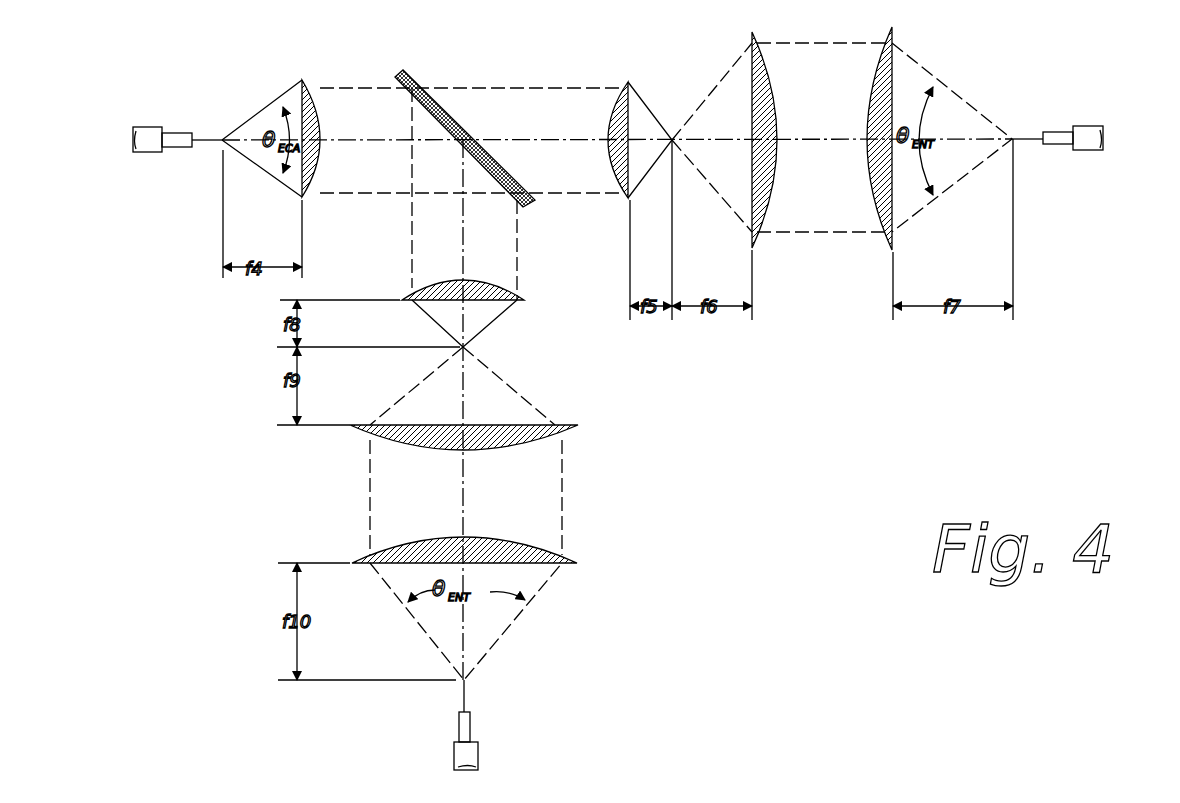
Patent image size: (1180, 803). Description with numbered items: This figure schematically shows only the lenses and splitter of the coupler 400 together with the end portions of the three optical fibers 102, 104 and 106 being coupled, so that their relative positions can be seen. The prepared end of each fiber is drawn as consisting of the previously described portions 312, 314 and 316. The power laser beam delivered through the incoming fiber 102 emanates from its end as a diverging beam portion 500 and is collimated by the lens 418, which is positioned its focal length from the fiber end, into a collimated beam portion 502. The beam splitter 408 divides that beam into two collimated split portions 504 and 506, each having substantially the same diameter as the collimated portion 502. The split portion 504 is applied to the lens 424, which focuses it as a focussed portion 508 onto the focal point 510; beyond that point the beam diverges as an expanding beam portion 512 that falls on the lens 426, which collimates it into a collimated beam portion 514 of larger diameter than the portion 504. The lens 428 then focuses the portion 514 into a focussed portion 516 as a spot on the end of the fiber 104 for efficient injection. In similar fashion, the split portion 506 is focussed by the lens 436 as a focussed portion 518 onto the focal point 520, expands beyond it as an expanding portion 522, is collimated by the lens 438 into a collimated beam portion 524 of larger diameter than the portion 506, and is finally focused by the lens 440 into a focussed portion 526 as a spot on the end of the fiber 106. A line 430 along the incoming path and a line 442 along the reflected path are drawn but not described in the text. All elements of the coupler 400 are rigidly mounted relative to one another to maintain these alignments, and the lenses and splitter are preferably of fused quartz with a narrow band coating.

The incoming fiber 102 is at (157, 115).
The fiber 104 is at (1086, 114).
The fiber 106 is at (445, 745).
The end preparation portion 312 is at (148, 152).
The end preparation portion 314 is at (180, 150).
The end preparation portion 316 is at (205, 143).
The coupler 400 is at (783, 433).
The beam splitter 408 is at (418, 70).
The lens 418 is at (300, 78).
The lens 424 is at (640, 112).
The lens 426 is at (757, 52).
The lens 428 is at (896, 46).
The optical axis 430 is at (578, 138).
The lens 436 is at (523, 299).
The lens 438 is at (578, 442).
The lens 440 is at (578, 542).
The optical axis 442 is at (464, 246).
The diverging beam portion 500 is at (262, 108).
The collimated beam portion 502 is at (365, 84).
The collimated split portion 504 is at (552, 90).
The collimated split portion 506 is at (517, 236).
The focussed portion 508 is at (655, 122).
The focal point 510 is at (673, 132).
The expanding beam portion 512 is at (738, 62).
The collimated beam portion 514 is at (836, 48).
The focussed portion 516 is at (968, 102).
The focussed portion 518 is at (500, 318).
The focal point 520 is at (466, 347).
The expanding portion 522 is at (528, 396).
The collimated beam portion 524 is at (563, 494).
The focussed portion 526 is at (545, 598).